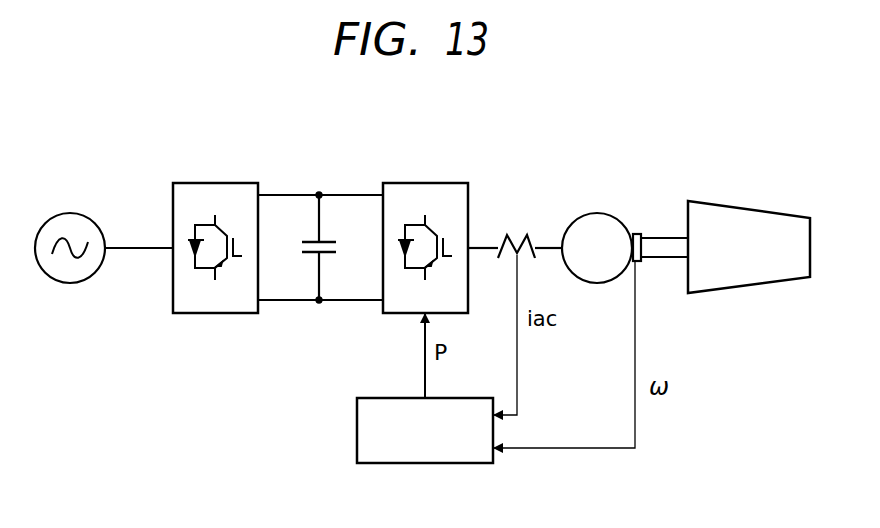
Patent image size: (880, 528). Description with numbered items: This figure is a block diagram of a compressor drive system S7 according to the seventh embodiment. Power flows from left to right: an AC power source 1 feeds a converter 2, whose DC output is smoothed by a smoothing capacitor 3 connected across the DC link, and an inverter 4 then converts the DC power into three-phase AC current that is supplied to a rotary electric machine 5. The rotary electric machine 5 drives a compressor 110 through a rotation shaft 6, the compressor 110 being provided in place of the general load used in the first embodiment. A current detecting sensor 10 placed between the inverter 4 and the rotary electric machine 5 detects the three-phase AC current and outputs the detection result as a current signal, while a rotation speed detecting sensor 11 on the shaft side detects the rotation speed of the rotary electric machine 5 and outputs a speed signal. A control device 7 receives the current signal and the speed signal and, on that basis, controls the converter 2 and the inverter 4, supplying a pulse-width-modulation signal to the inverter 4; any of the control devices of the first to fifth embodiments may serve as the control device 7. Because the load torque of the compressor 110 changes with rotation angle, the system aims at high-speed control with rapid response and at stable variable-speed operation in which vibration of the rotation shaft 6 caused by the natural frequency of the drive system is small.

The AC power source 1 is at (63, 218).
The converter 2 is at (173, 184).
The smoothing capacitor 3 is at (305, 242).
The inverter 4 is at (407, 183).
The rotary electric machine 5 is at (592, 212).
The rotation shaft 6 is at (645, 262).
The control device 7 is at (357, 420).
The current detecting sensor 10 is at (525, 235).
The rotation speed detecting sensor 11 is at (640, 233).
The compressor 110 is at (748, 210).
The compressor drive system S7 is at (219, 139).